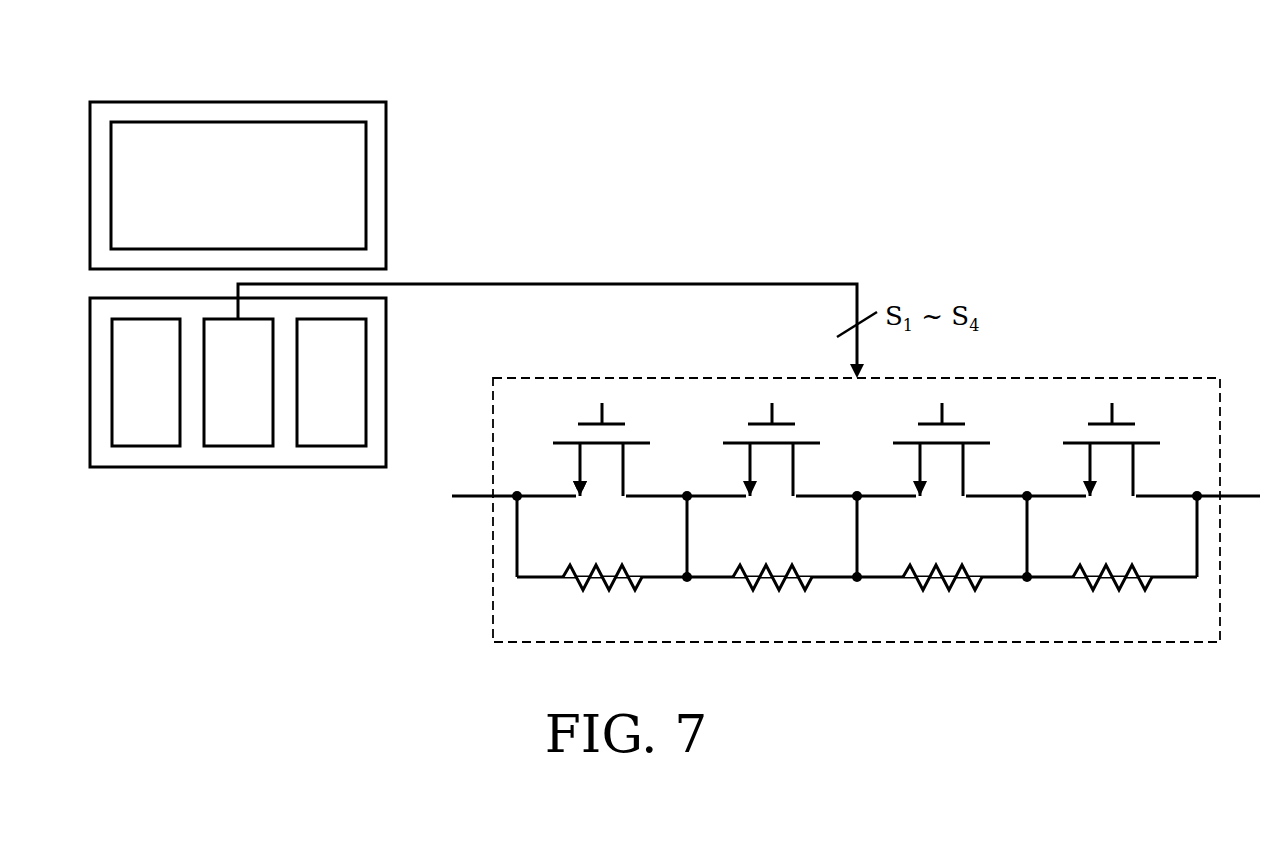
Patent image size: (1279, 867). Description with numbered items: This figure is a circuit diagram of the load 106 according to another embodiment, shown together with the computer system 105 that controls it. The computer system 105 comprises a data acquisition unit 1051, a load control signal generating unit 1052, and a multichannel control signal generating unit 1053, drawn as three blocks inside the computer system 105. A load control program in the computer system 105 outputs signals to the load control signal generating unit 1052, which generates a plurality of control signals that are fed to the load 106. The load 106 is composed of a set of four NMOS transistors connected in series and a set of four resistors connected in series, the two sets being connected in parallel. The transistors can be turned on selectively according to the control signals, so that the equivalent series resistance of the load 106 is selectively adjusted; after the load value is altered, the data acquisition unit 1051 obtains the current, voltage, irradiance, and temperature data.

The computer system 105 is at (239, 102).
The data acquisition unit 1051 is at (330, 446).
The load control signal generating unit 1052 is at (238, 446).
The multichannel control signal generating unit 1053 is at (145, 446).
The load 106 is at (1152, 378).